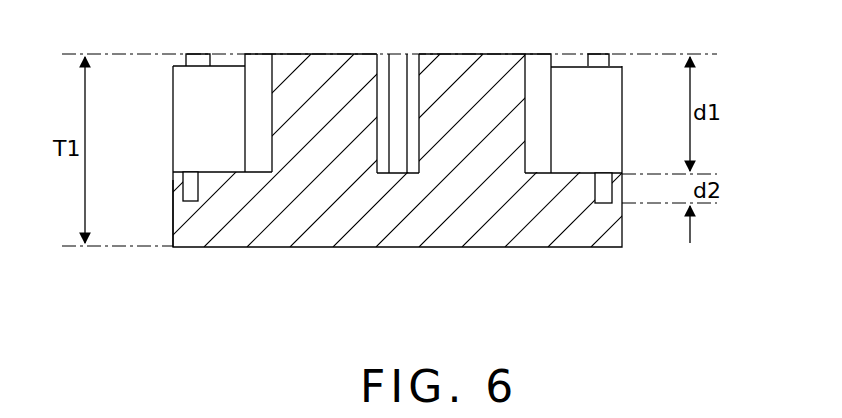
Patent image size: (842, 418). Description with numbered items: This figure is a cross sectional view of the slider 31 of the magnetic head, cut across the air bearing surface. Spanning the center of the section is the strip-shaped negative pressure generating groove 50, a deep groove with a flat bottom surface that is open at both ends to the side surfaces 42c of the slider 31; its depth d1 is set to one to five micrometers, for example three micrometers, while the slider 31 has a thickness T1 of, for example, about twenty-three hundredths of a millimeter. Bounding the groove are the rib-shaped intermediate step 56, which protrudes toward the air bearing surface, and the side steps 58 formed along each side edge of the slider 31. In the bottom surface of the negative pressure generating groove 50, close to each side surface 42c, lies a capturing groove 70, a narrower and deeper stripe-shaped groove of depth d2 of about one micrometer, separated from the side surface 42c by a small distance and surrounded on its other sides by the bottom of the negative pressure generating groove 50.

The slider 31 is at (452, 228).
The side surface 42c is at (173, 224).
The negative pressure generating groove 50 is at (216, 163).
The intermediate step 56 is at (333, 60).
The side step 58 is at (195, 60).
The capturing groove 70 is at (192, 178).